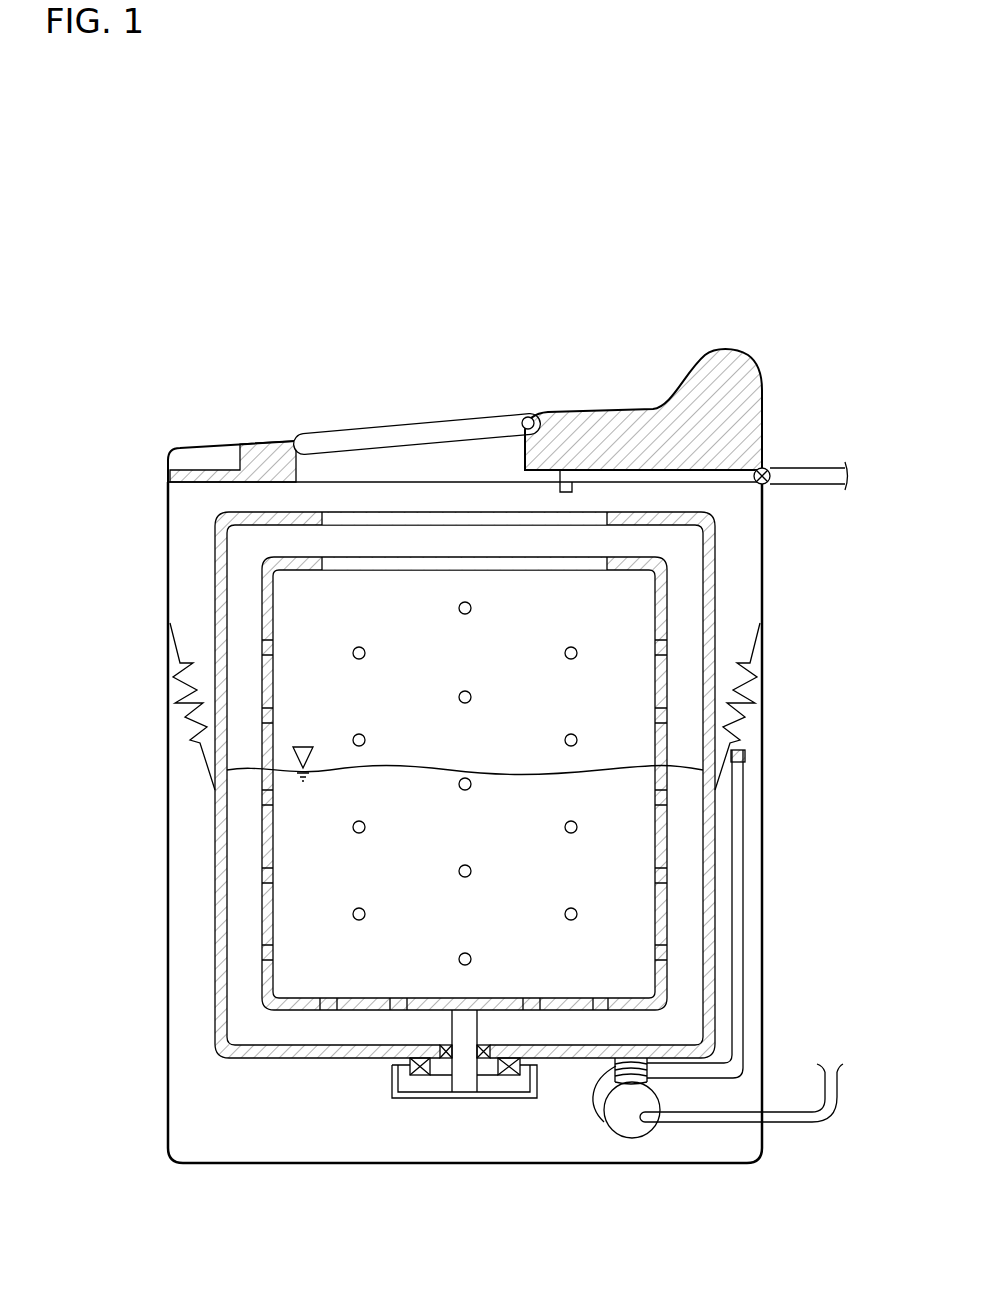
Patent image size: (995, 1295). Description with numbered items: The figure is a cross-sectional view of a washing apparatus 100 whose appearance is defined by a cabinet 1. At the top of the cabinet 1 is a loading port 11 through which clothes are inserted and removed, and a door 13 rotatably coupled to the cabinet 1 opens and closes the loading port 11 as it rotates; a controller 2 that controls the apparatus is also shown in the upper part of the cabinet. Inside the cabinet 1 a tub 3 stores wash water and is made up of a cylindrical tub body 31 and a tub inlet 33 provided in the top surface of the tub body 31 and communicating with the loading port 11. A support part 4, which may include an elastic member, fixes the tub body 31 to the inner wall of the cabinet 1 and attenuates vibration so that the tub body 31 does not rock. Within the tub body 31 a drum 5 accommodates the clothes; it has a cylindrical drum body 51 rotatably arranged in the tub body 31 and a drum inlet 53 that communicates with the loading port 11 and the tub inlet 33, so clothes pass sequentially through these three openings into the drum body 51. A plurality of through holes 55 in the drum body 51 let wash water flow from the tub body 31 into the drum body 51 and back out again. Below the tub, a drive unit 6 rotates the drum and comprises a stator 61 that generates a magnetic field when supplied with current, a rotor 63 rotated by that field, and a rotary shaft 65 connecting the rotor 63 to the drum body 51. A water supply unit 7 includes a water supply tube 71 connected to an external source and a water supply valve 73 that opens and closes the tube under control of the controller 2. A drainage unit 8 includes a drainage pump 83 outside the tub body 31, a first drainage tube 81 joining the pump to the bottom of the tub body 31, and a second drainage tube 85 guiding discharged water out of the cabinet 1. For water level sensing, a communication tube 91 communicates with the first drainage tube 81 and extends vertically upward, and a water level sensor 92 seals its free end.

The washing apparatus 100 is at (792, 277).
The cabinet 1 is at (740, 596).
The controller 2 is at (204, 456).
The loading port 11 is at (386, 470).
The door 13 is at (428, 426).
The tub 3 is at (387, 772).
The tub body 31 is at (222, 545).
The tub inlet 33 is at (356, 517).
The support part 4 is at (178, 722).
The drum 5 is at (458, 703).
The drum body 51 is at (268, 962).
The drum inlet 53 is at (483, 562).
The through holes 55 is at (268, 920).
The drive unit 6 is at (464, 1133).
The stator 61 is at (423, 1076).
The rotor 63 is at (466, 1078).
The rotary shaft 65 is at (508, 1096).
The water supply unit 7 is at (692, 514).
The water supply tube 71 is at (720, 476).
The water supply valve 73 is at (768, 484).
The drainage unit 8 is at (709, 1157).
The first drainage tube 81 is at (600, 1102).
The drainage pump 83 is at (634, 1125).
The second drainage tube 85 is at (741, 1138).
The communication tube 91 is at (738, 800).
The water level sensor 92 is at (745, 754).